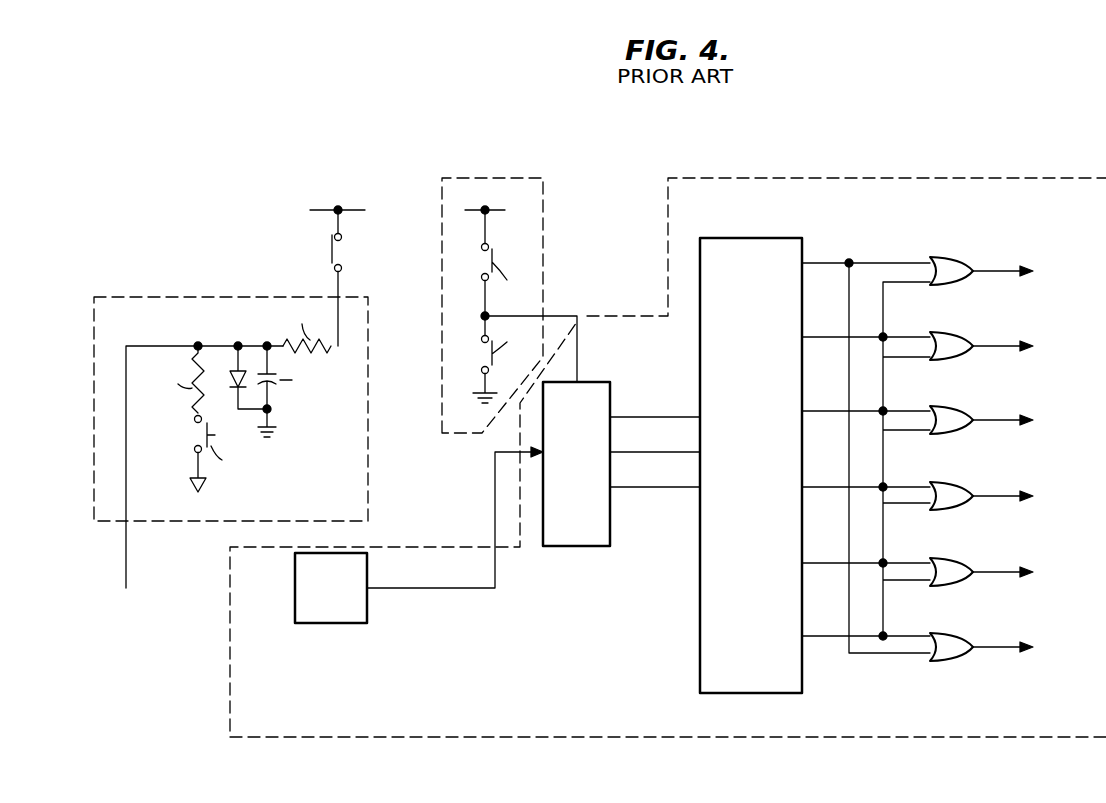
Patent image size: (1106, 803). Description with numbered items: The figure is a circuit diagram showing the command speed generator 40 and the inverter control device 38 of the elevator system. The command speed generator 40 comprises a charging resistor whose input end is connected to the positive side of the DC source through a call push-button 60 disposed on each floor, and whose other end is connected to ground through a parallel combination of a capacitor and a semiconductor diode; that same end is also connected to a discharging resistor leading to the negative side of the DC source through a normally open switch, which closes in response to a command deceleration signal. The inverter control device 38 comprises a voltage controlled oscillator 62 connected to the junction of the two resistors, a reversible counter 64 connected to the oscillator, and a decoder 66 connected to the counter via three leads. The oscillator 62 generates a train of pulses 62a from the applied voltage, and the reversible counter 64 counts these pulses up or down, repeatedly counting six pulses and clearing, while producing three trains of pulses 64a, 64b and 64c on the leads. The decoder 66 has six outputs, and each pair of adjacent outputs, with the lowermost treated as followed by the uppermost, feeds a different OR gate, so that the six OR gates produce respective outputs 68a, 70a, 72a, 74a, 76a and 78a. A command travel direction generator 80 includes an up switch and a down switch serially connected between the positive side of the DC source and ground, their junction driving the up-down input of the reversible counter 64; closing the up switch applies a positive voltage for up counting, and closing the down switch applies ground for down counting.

The inverter control device 38 is at (668, 442).
The command speed generator 40 is at (231, 426).
The call push-button 60 is at (335, 252).
The voltage controlled oscillator 62 is at (320, 624).
The train of pulses 62a is at (478, 592).
The reversible counter 64 is at (593, 547).
The train of pulses 64a is at (655, 407).
The train of pulses 64b is at (655, 441).
The train of pulses 64c is at (655, 476).
The decoder 66 is at (732, 238).
The output of OR gate 68a is at (945, 254).
The output of OR gate 70a is at (958, 330).
The output of OR gate 72a is at (950, 404).
The output of OR gate 74a is at (948, 478).
The output of OR gate 76a is at (948, 553).
The output of OR gate 78a is at (945, 628).
The command travel direction generator 80 is at (477, 175).